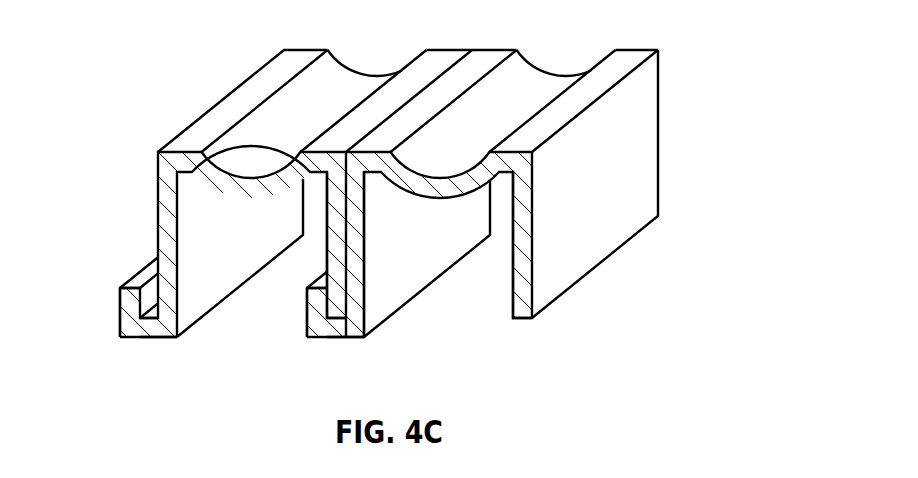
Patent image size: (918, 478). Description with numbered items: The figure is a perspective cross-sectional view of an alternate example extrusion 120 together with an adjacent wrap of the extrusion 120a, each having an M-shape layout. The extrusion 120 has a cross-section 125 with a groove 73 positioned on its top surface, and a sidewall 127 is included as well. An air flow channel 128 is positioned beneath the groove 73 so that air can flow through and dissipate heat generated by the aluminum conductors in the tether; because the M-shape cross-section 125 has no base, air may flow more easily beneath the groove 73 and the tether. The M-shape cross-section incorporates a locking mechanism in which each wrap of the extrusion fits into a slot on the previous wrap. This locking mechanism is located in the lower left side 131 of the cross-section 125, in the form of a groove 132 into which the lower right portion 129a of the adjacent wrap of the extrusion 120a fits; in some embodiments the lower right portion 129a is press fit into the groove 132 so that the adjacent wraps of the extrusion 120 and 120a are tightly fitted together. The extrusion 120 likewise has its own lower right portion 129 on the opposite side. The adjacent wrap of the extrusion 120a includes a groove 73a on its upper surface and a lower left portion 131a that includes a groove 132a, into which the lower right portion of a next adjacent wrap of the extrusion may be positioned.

The adjacent wrap of the extrusion 120a is at (150, 87).
The extrusion 120 is at (690, 66).
The groove 73a is at (327, 102).
The groove 73 is at (527, 100).
The sidewall 127 is at (628, 131).
The cross-section 125 is at (358, 253).
The air flow channel 128 is at (488, 292).
The lower right portion 129 is at (527, 295).
The lower right portion 129a is at (320, 308).
The lower left side 131 is at (352, 328).
The lower left portion 131a is at (167, 328).
The groove 132 is at (320, 308).
The groove 132a is at (150, 322).